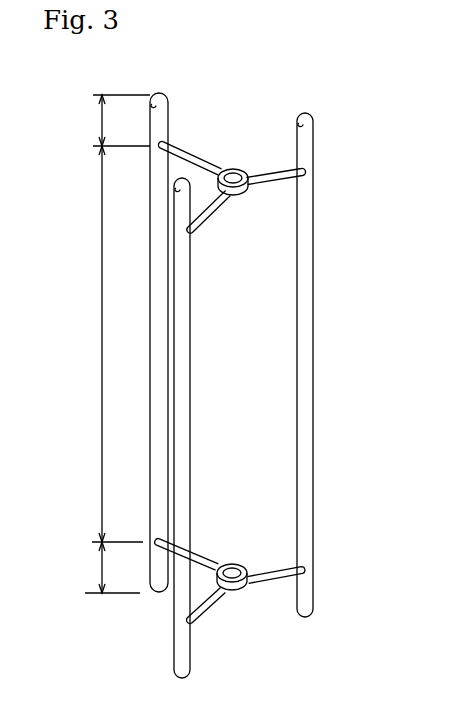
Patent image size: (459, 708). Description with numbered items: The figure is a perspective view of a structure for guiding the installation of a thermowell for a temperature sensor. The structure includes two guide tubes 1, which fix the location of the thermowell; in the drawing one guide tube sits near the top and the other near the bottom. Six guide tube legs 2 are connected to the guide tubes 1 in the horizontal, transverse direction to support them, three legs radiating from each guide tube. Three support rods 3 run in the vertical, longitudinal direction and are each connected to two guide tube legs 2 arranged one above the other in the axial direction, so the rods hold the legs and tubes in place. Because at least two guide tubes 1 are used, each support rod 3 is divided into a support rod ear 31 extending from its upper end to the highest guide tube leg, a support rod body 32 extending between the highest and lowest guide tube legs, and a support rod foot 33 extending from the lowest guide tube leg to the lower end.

The guide tube 1 is at (222, 168).
The guide tube leg 2 is at (280, 178).
The support rod 3 is at (308, 240).
The support rod ear 31 is at (101, 120).
The support rod body 32 is at (78, 344).
The support rod foot 33 is at (97, 567).